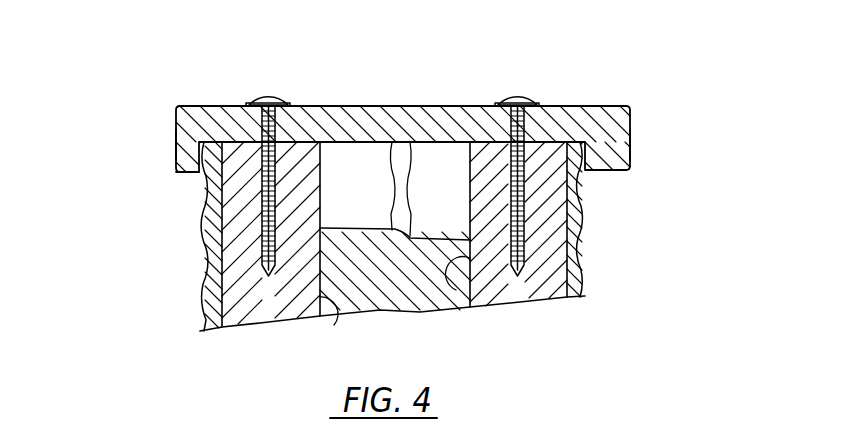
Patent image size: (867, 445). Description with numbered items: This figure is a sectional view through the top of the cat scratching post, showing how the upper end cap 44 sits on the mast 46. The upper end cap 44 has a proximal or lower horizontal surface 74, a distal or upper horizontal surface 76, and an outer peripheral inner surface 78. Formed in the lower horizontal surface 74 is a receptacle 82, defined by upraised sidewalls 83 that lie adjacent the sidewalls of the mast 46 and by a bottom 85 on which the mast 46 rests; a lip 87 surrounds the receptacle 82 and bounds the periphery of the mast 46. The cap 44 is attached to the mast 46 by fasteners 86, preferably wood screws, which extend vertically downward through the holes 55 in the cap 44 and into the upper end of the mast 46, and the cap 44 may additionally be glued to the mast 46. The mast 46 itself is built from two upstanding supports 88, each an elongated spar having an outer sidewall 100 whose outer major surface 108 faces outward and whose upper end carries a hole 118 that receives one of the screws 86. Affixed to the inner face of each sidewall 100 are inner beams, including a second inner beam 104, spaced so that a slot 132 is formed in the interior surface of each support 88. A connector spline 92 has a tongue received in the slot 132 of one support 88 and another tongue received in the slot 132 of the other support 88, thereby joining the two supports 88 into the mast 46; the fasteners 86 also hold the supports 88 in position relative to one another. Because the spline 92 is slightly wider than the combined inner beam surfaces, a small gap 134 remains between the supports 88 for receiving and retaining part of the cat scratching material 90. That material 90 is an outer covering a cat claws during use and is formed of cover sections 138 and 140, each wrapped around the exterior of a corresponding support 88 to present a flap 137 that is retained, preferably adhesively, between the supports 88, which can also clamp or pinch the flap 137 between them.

The upper end cap 44 is at (640, 104).
The mast 46 is at (598, 292).
The holes 55 is at (222, 106).
The lower horizontal surface 74 is at (312, 142).
The upper horizontal surface 76 is at (352, 106).
The outer peripheral inner surface 78 is at (176, 148).
The receptacle 82 is at (483, 106).
The upraised sidewalls 83 is at (593, 158).
The bottom 85 is at (597, 106).
The fasteners 86 is at (270, 98).
The lip 87 is at (610, 171).
The supports 88 is at (266, 314).
The cat scratching material 90 is at (410, 142).
The connector spline 92 is at (420, 290).
The outer sidewall 100 is at (205, 318).
The second inner beam 104 is at (368, 142).
The outer major surface 108 is at (208, 239).
The hole 118 is at (205, 211).
The slot 132 is at (336, 320).
The gap 134 is at (400, 204).
The flap 137 is at (401, 236).
The cover section 138 is at (205, 264).
The cover section 140 is at (584, 216).